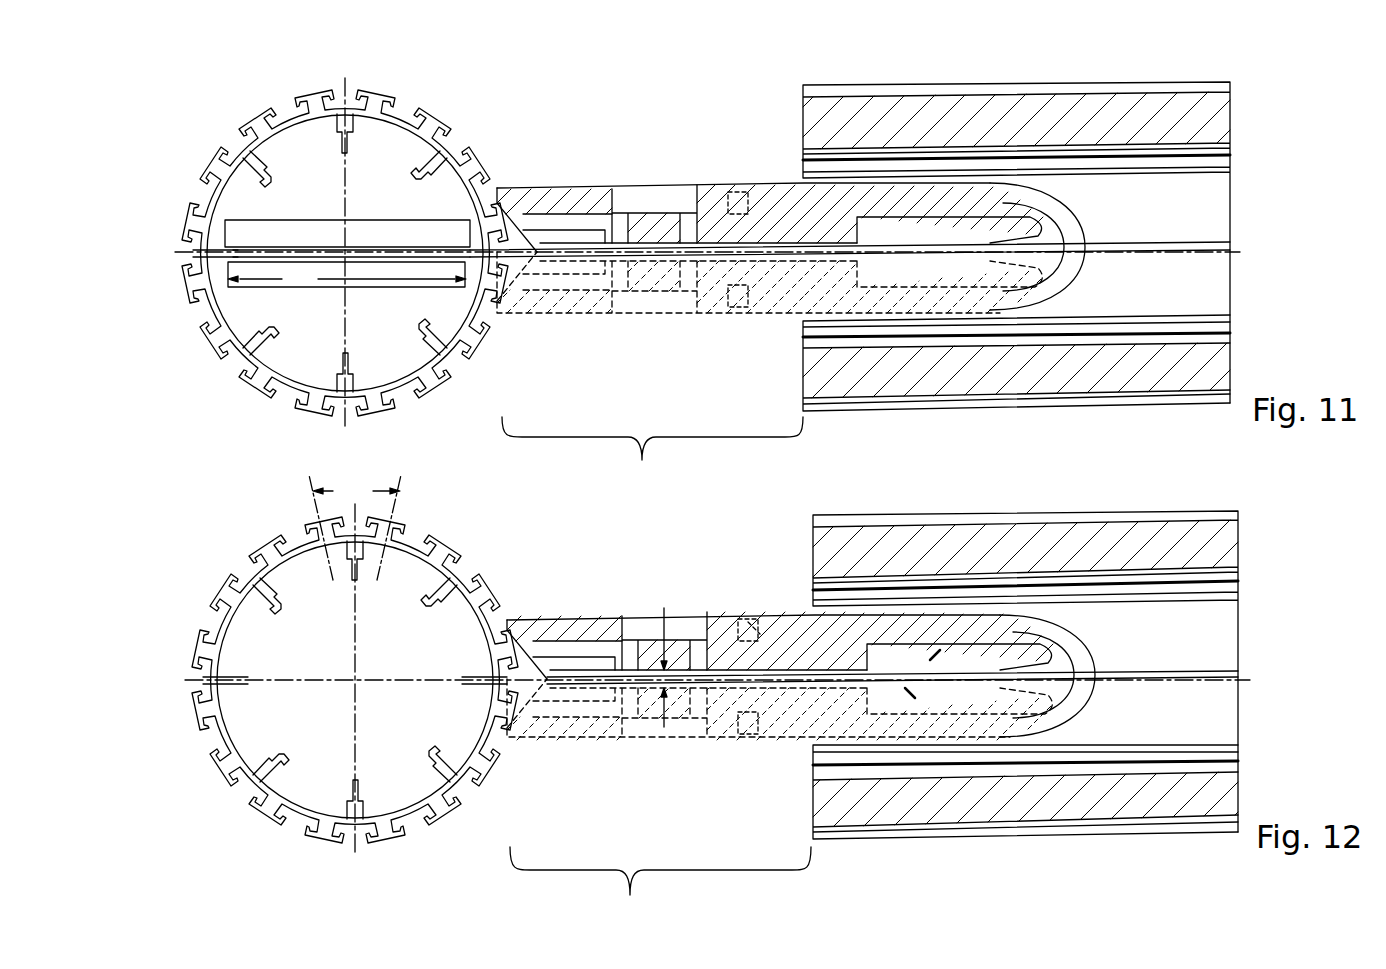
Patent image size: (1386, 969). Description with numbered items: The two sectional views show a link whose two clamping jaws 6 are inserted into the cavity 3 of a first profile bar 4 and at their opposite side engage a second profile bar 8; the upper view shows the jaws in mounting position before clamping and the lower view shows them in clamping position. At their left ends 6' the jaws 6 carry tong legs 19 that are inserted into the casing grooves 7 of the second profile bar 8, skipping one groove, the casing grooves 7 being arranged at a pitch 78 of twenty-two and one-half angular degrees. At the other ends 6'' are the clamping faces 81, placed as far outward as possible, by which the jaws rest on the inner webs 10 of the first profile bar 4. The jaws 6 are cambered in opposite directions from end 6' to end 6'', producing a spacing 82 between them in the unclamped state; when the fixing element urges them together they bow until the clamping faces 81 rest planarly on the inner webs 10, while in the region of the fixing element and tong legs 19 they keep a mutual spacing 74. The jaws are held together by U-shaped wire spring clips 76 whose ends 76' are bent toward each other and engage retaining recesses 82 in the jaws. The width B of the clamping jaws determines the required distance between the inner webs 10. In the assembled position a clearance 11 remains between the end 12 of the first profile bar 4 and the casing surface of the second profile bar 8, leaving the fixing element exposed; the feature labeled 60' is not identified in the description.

In FIG. 11, the cavity 3 is at (1178, 190).
In FIG. 12, the cavity 3 is at (1218, 652).
In FIG. 11, the first profile bar 4 is at (1234, 79).
In FIG. 12, the first profile bar 4 is at (1245, 505).
In FIG. 11, the clamping jaws 6 is at (769, 196).
In FIG. 12, the clamping jaws 6 is at (779, 724).
In FIG. 11, the left end of clamping jaw 6' is at (507, 165).
In FIG. 12, the left end of clamping jaw 6' is at (513, 593).
In FIG. 11, the other end of clamping jaw 6'' is at (1056, 214).
In FIG. 12, the other end of clamping jaw 6'' is at (936, 562).
In FIG. 11, the casing grooves 7 is at (460, 362).
In FIG. 12, the casing grooves 7 is at (468, 790).
In FIG. 11, the second profile bar 8 is at (436, 101).
In FIG. 12, the second profile bar 8 is at (449, 528).
In FIG. 11, the inner webs 10 is at (1232, 250).
In FIG. 12, the inner webs 10 is at (1222, 675).
In FIG. 11, the clearance 11 is at (652, 460).
In FIG. 12, the clearance 11 is at (660, 891).
In FIG. 11, the end of first profile bar 12 is at (818, 412).
In FIG. 12, the end of first profile bar 12 is at (824, 852).
In FIG. 11, the tong legs 19 is at (522, 207).
In FIG. 12, the tong legs 19 is at (530, 635).
In FIG. 11, the recess 60' is at (654, 247).
In FIG. 12, the mutual spacing 74 is at (647, 651).
In FIG. 11, the U-shaped spring clips 76 is at (1080, 246).
In FIG. 12, the U-shaped spring clips 76 is at (1082, 676).
In FIG. 12, the ends of spring clips 76' is at (777, 582).
In FIG. 12, the pitch of casing grooves 78 is at (355, 521).
In FIG. 12, the clamping faces 81 is at (912, 691).
In FIG. 11, the spacing 82 is at (790, 283).
In FIG. 12, the spacing 82 is at (740, 614).
In FIG. 11, the width of clamping jaws B is at (347, 258).